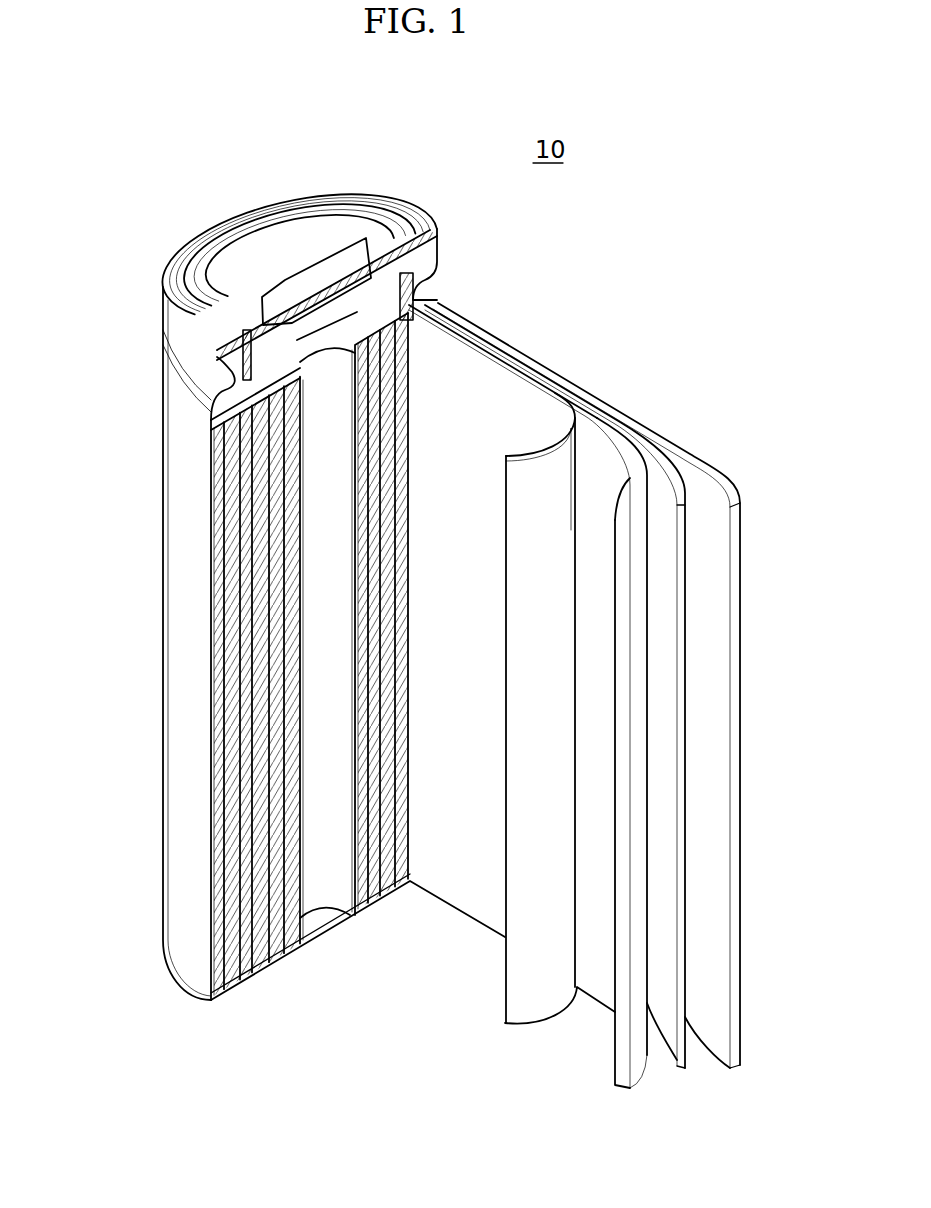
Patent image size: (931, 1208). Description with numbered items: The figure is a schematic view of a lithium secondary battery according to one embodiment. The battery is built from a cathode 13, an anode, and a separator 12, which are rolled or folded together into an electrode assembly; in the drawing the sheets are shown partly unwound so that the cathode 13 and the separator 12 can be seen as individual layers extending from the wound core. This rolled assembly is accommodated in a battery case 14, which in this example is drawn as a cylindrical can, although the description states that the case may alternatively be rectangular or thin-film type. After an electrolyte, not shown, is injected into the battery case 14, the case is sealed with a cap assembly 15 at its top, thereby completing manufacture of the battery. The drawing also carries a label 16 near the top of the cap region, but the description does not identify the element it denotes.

The separator 12 is at (725, 487).
The cathode 13 is at (600, 430).
The battery case 14 is at (510, 377).
The cap assembly 15 is at (176, 645).
The cap assembly 16 is at (297, 243).